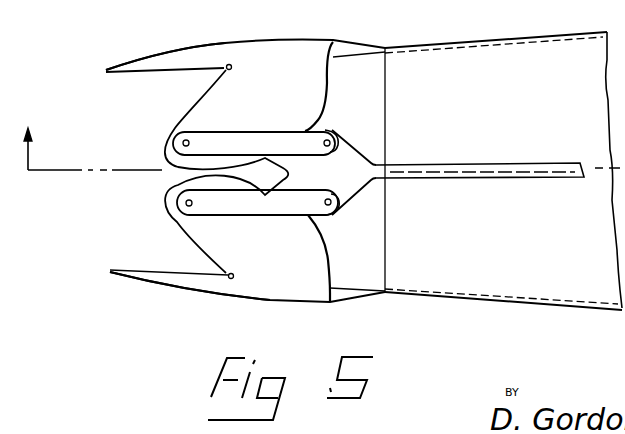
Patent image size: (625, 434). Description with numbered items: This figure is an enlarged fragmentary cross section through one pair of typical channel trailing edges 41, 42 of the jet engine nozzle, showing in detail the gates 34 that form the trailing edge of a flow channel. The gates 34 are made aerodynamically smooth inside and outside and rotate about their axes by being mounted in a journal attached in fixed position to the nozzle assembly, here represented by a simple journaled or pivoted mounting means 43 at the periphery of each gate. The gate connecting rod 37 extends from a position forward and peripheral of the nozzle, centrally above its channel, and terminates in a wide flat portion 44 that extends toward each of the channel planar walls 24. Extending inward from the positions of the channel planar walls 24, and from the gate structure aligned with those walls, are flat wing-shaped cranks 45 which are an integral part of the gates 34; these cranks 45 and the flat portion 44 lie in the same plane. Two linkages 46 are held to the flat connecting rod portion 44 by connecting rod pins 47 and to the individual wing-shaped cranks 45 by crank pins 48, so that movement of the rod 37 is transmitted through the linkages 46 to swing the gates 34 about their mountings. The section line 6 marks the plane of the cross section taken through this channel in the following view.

The section line 6— 6 is at (92, 142).
The channel planar wall 24 is at (472, 42).
The gate 34 is at (224, 43).
The gate connecting rod 37 is at (462, 165).
The channel trailing edge 41 is at (130, 270).
The channel trailing edge 42 is at (142, 72).
The journaled or pivoted mounting means 43 is at (233, 67).
The wide flat portion 44 is at (340, 181).
The wing-shaped crank 45 is at (262, 111).
The linkage 46 is at (256, 153).
The connecting rod pin 47 is at (329, 145).
The crank pin 48 is at (186, 140).